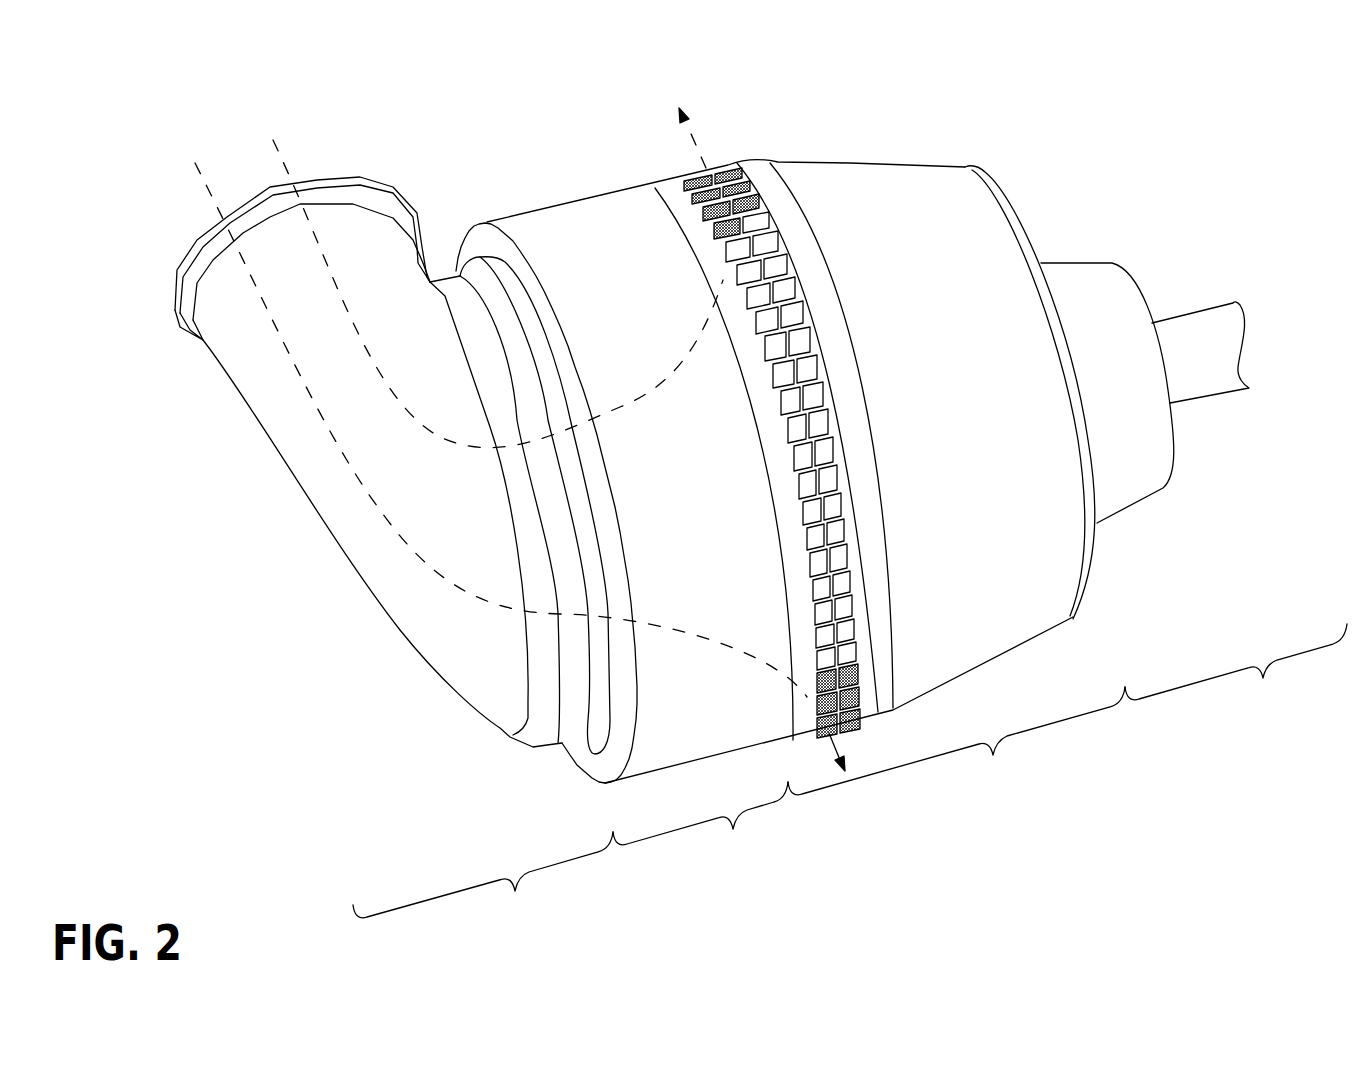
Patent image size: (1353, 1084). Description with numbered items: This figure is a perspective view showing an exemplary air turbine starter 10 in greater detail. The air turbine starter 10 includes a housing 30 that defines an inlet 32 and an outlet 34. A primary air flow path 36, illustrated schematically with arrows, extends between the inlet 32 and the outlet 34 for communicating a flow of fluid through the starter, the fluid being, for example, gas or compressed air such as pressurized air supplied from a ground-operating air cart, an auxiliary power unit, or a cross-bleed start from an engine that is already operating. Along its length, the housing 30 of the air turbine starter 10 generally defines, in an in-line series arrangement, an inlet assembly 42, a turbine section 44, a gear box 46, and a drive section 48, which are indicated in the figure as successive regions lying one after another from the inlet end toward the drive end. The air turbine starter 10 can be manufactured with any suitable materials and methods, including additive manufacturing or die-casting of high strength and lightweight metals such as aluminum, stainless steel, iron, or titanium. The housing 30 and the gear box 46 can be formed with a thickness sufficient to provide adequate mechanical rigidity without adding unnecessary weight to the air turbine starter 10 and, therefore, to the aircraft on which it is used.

The air turbine starter 10 is at (1081, 86).
The housing 30 is at (553, 204).
The inlet 32 is at (376, 175).
The outlet 34 is at (751, 183).
The primary air flow path 36 is at (790, 261).
The inlet assembly 42 is at (483, 877).
The turbine section 44 is at (700, 820).
The gear box 46 is at (956, 741).
The drive section 48 is at (1236, 665).